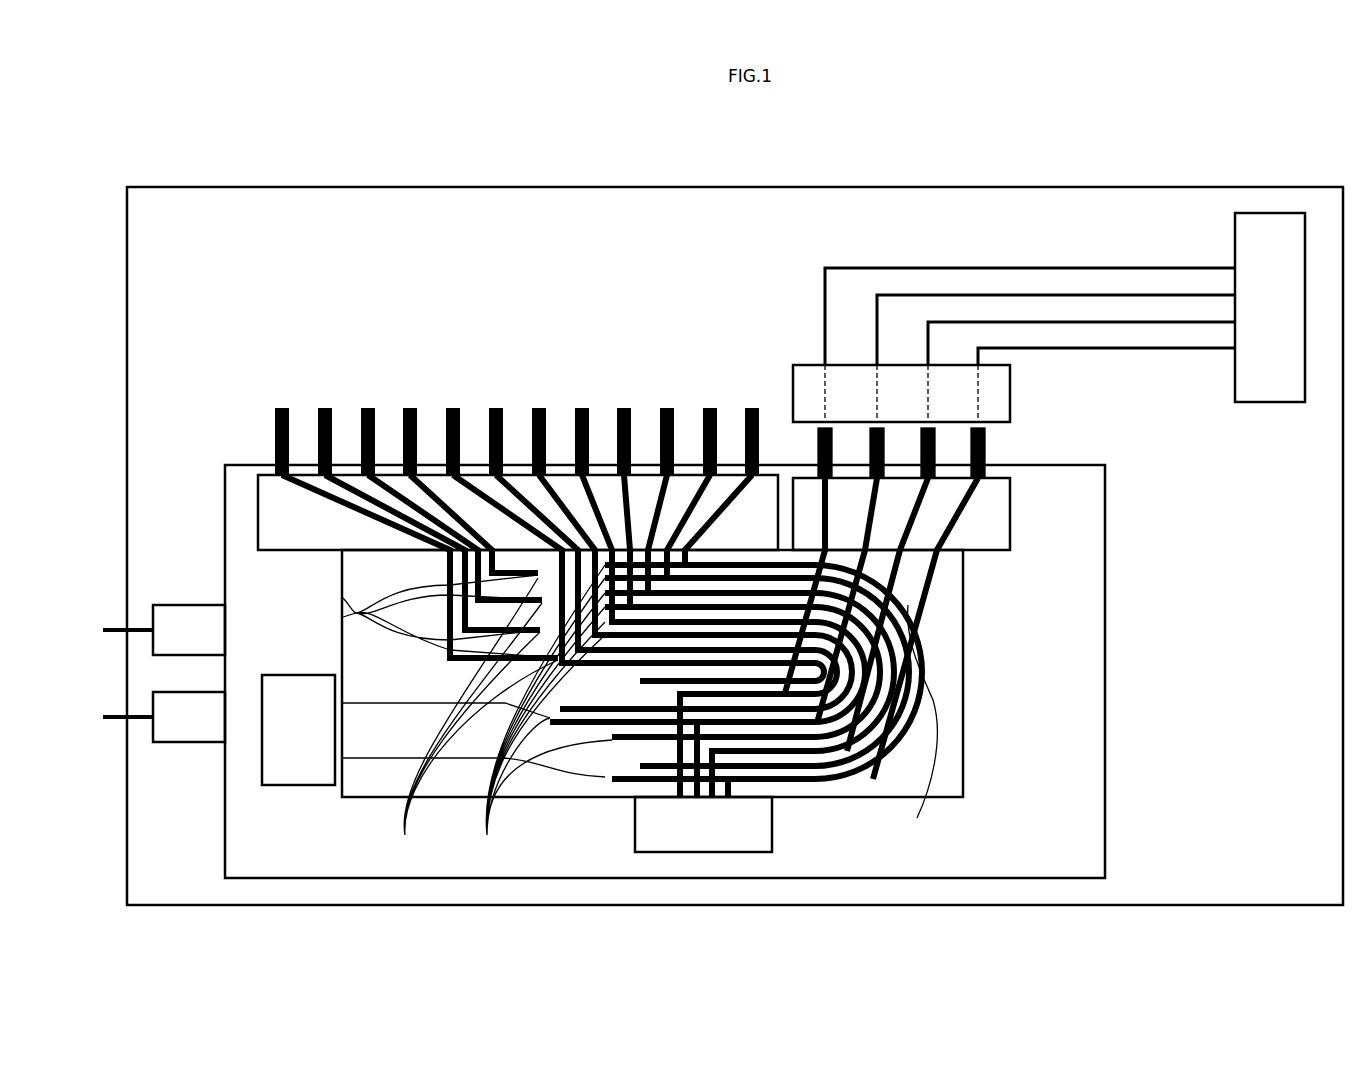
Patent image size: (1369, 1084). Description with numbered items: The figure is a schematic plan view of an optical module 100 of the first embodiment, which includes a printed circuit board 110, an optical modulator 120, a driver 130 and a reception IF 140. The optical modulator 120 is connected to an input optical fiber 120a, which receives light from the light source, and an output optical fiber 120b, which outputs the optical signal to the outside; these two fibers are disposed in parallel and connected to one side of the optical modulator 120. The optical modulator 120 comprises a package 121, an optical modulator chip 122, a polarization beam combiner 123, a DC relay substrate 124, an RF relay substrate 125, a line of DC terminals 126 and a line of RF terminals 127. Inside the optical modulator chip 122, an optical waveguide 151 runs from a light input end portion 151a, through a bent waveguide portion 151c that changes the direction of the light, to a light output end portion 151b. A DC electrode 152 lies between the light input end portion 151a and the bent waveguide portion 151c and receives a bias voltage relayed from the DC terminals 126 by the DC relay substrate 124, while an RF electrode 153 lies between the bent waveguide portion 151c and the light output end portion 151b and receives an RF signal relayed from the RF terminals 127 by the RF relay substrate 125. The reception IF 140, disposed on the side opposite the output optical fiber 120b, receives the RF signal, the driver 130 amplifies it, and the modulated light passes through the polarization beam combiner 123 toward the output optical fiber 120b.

The optical module 100 is at (1270, 140).
The printed circuit board 110 is at (1262, 187).
The optical modulator 120 is at (629, 603).
The input optical fiber 120a is at (105, 628).
The output optical fiber 120b is at (103, 722).
The package 121 is at (1105, 540).
The optical modulator chip 122 is at (965, 620).
The polarization beam combiner 123 is at (300, 785).
The DC relay substrate 124 is at (258, 513).
The RF relay substrate 125 is at (1010, 515).
The DC terminal 126 is at (410, 408).
The RF terminal 127 is at (987, 459).
The driver 130 is at (1010, 393).
The reception IF 140 is at (1272, 402).
The optical waveguide 151 is at (343, 598).
The light input end portion 151a is at (343, 617).
The light output end portion 151b is at (342, 758).
The bent waveguide portion 151c is at (921, 726).
The DC electrode 152 is at (500, 714).
The RF electrode 153 is at (808, 768).